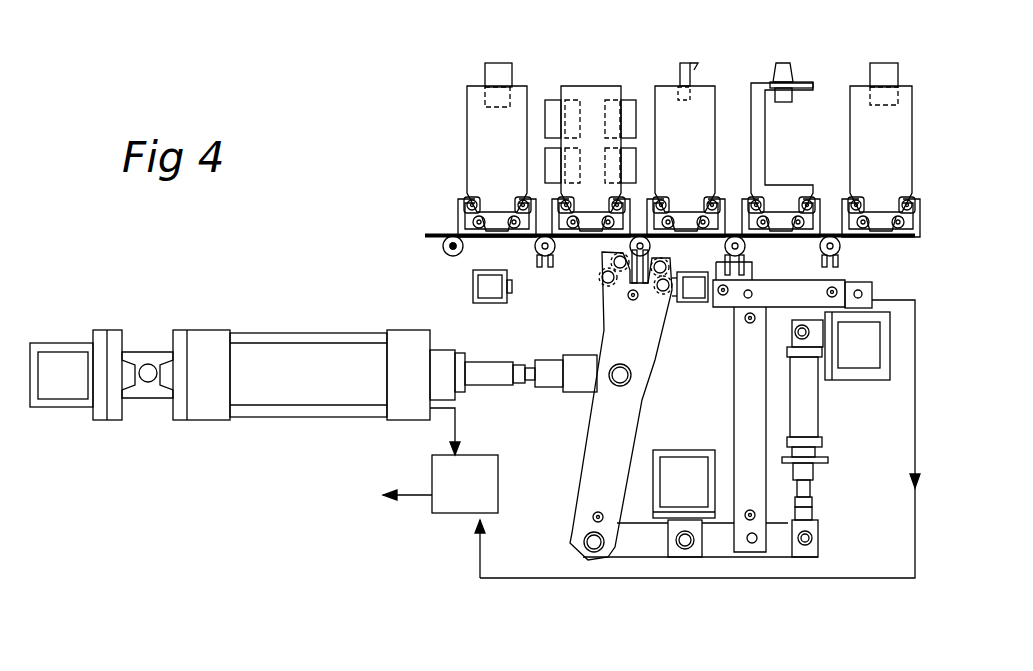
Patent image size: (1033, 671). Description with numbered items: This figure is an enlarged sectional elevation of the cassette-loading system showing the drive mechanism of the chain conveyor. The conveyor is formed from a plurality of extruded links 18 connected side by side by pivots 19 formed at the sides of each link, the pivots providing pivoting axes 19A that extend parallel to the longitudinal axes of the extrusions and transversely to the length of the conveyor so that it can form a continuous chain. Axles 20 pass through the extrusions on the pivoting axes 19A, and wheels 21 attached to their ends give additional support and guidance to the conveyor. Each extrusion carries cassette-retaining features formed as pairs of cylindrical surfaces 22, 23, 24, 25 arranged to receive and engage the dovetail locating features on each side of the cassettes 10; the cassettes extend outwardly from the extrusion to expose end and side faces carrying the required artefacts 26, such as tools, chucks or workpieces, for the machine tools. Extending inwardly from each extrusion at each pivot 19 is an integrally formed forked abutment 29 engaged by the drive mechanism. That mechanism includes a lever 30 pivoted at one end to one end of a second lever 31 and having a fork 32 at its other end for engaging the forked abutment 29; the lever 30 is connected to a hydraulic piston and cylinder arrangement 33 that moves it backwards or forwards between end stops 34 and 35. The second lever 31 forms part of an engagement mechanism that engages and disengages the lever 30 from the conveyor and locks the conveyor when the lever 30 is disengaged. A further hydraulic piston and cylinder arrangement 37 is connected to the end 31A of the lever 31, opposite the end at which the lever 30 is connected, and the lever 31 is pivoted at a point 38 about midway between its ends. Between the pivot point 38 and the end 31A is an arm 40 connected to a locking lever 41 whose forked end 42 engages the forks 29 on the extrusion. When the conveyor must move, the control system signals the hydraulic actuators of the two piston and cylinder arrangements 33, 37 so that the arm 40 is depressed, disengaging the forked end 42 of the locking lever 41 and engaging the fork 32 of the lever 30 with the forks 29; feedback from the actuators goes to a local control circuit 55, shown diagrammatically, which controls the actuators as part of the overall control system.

The cassette 10 is at (468, 130).
The extruded link 18 is at (462, 218).
The pivot 19 is at (448, 240).
The pivoting axis 19A is at (448, 252).
The axle 20 is at (537, 247).
The wheel 21 is at (447, 245).
The cylindrical surface 22 is at (566, 198).
The cylindrical surface 23 is at (628, 197).
The cylindrical surface 24 is at (665, 207).
The cylindrical surface 25 is at (700, 217).
The artefact 26 is at (773, 80).
The forked abutment 29 is at (545, 264).
The lever 30 is at (607, 437).
The second lever 31 is at (647, 540).
The end of lever 31A is at (822, 543).
The fork 32 is at (630, 265).
The hydraulic piston and cylinder arrangement 33 is at (318, 410).
The end stop 34 is at (675, 300).
The end stop 35 is at (515, 290).
The hydraulic piston and cylinder arrangement 37 is at (810, 412).
The pivot point 38 is at (687, 545).
The arm 40 is at (743, 408).
The locking lever 41 is at (802, 292).
The forked end 42 is at (750, 253).
The local control circuit 55 is at (453, 502).